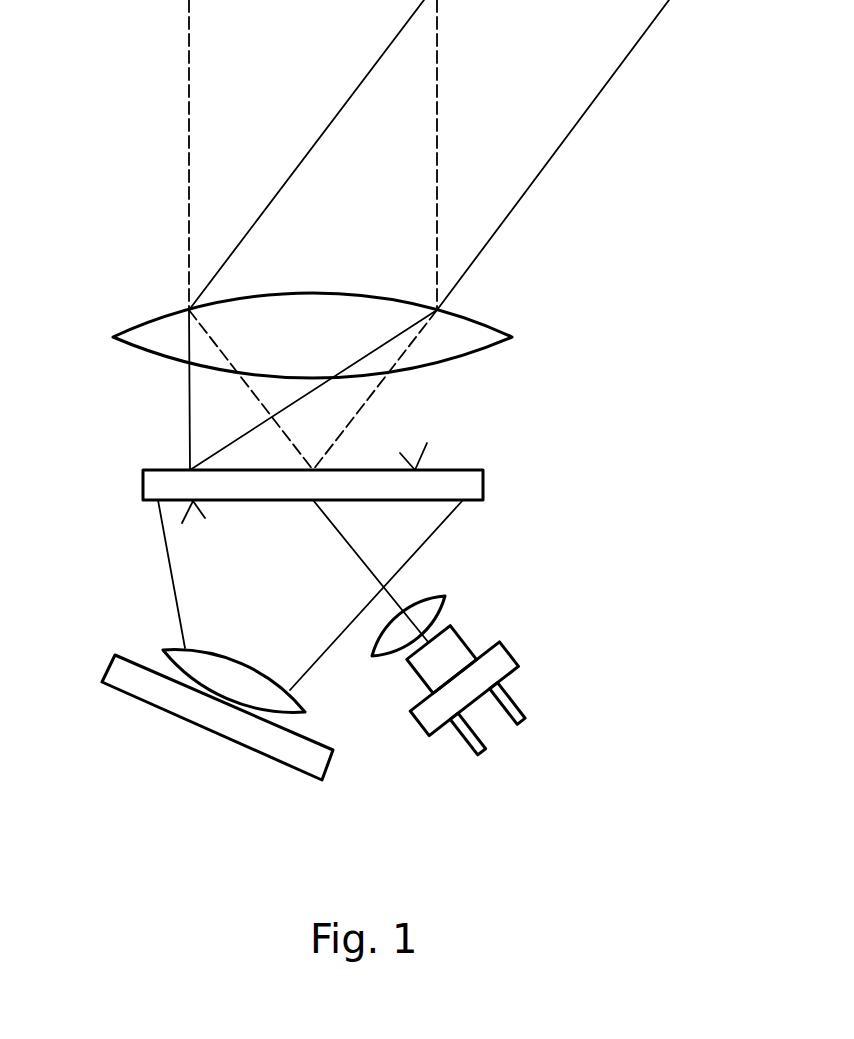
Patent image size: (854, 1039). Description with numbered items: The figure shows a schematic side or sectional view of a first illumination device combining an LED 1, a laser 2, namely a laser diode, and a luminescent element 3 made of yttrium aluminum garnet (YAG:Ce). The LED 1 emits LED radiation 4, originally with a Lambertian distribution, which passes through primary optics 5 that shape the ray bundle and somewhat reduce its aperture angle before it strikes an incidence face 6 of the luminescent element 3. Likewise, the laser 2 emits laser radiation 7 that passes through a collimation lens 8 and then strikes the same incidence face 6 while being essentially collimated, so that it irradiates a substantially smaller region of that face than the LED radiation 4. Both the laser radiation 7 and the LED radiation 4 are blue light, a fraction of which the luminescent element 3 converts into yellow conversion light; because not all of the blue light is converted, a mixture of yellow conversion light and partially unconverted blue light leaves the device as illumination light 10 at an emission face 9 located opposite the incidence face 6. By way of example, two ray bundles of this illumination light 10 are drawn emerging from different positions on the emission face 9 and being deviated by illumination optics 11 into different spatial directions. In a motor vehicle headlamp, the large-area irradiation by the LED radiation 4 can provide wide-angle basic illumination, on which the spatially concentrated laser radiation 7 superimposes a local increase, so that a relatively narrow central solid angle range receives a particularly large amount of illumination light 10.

The LED 1 is at (178, 700).
The laser 2 is at (465, 687).
The luminescent element 3 is at (172, 485).
The LED radiation 4 is at (285, 603).
The primary optics 5 is at (200, 667).
The incidence face 6 is at (182, 523).
The laser radiation 7 is at (358, 553).
The collimation lens 8 is at (422, 612).
The emission face 9 is at (427, 443).
The illumination light 10 is at (190, 427).
The illumination optics 11 is at (147, 322).